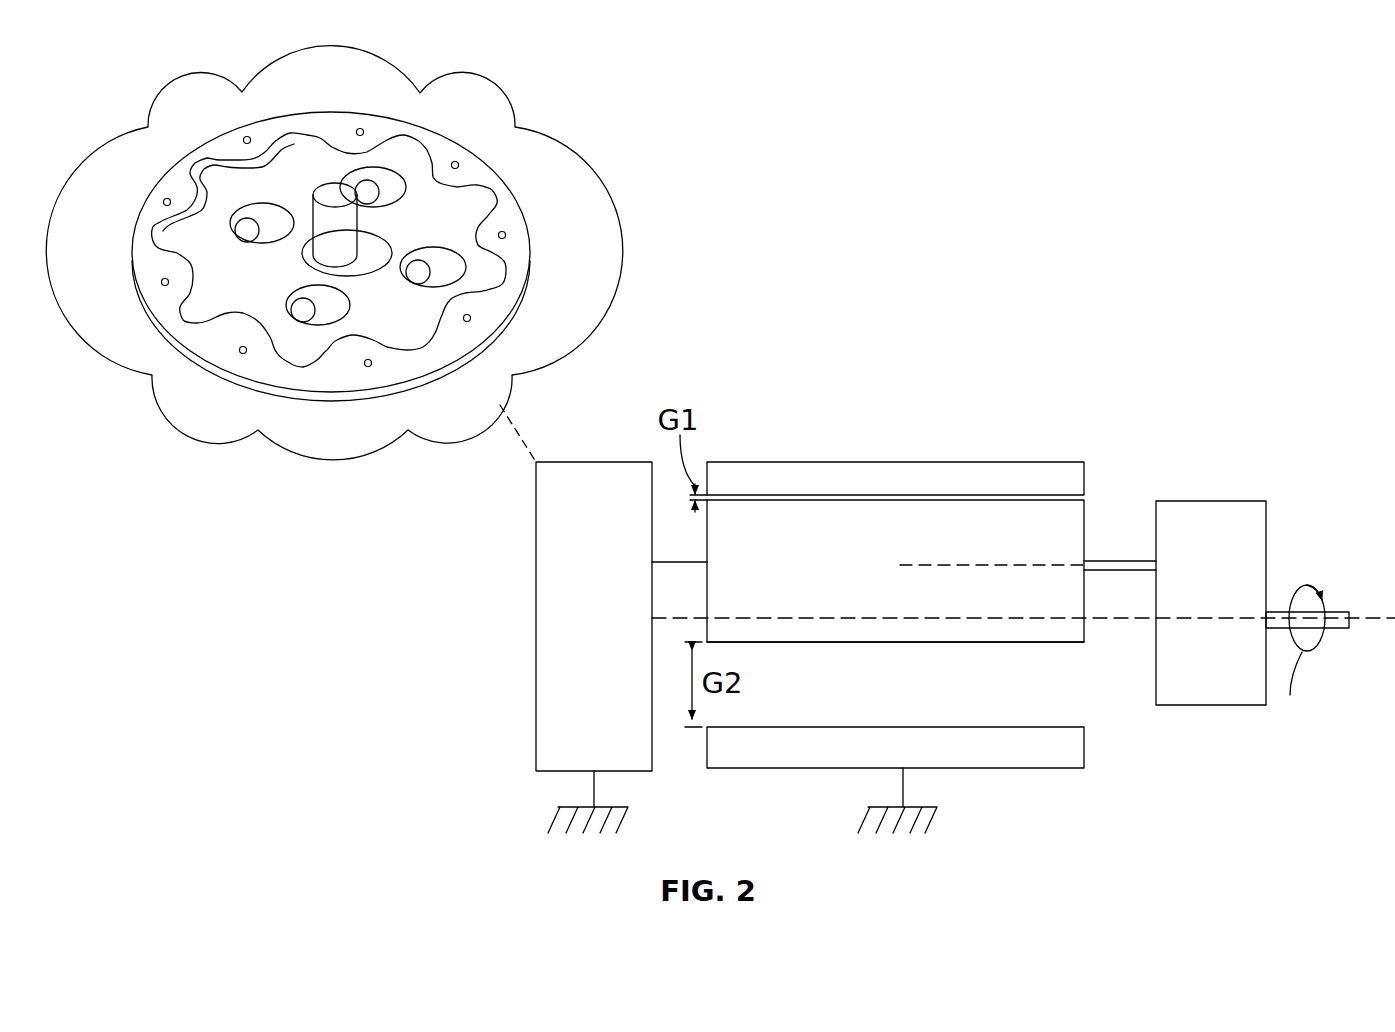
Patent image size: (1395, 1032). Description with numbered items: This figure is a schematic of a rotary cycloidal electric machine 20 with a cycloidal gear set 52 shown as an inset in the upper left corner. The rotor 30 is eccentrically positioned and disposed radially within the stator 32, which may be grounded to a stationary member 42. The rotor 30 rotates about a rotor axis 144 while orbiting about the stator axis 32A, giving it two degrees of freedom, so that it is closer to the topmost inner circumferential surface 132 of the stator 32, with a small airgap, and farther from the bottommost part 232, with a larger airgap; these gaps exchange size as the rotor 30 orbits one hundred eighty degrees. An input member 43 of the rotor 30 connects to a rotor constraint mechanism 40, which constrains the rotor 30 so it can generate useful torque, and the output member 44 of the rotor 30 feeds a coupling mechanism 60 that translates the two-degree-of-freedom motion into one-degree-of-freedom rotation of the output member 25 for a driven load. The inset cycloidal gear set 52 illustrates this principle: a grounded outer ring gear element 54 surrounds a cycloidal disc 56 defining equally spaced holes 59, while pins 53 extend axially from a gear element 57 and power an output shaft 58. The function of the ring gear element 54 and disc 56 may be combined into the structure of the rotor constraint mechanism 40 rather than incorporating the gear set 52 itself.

The rotary cycloidal electric machine 20 is at (1180, 320).
The output member 25 is at (1322, 612).
The rotor 30 is at (976, 643).
The stator 32 is at (955, 603).
The stator axis 32A is at (1122, 620).
The rotor constraint mechanism 40 is at (536, 484).
The stationary member 42 is at (552, 815).
The input member 43 is at (690, 566).
The output member of the rotor 44 is at (1105, 561).
The cycloidal gear set 52 is at (603, 133).
The pins 53 is at (300, 317).
The outer ring gear element 54 is at (222, 148).
The cycloidal disc 56 is at (235, 292).
The gear element 57 is at (473, 250).
The output shaft 58 is at (357, 190).
The holes 59 is at (345, 322).
The coupling mechanism 60 is at (1218, 501).
The inner circumferential surface of the stator 132 is at (1084, 512).
The rotor axis 144 is at (913, 565).
The bottommost part of the inner circumferential surface 232 is at (1045, 727).